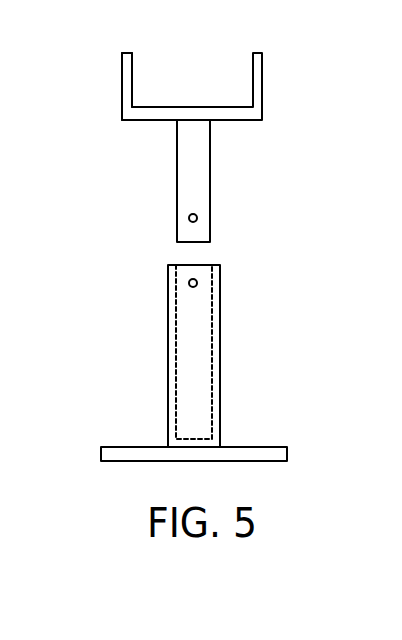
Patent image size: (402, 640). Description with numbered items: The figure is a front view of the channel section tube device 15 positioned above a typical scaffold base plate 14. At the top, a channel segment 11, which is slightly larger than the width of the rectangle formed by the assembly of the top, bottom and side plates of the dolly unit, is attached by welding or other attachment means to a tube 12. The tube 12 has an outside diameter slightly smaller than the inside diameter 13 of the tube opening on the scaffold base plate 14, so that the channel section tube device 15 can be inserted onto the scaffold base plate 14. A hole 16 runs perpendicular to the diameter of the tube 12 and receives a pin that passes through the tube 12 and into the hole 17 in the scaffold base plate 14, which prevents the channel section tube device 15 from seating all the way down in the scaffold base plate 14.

The channel segment 11 is at (265, 77).
The tube 12 is at (210, 153).
The inside diameter 13 is at (212, 323).
The scaffold base plate 14 is at (227, 347).
The channel section tube device 15 is at (107, 67).
The hole 16 is at (197, 218).
The hole 17 is at (190, 287).